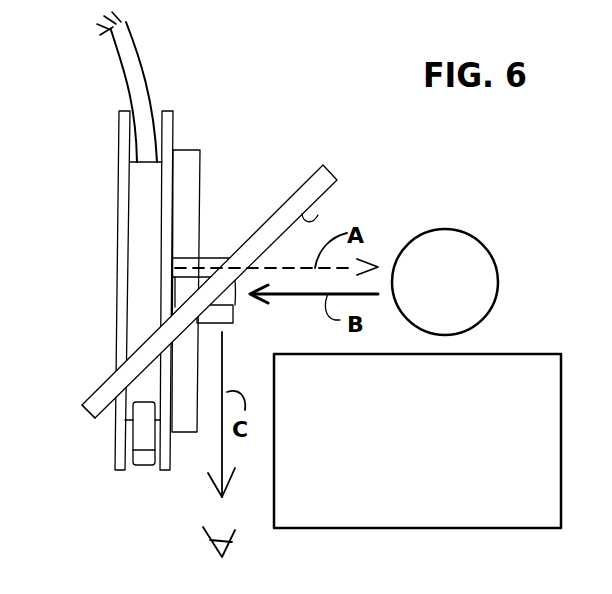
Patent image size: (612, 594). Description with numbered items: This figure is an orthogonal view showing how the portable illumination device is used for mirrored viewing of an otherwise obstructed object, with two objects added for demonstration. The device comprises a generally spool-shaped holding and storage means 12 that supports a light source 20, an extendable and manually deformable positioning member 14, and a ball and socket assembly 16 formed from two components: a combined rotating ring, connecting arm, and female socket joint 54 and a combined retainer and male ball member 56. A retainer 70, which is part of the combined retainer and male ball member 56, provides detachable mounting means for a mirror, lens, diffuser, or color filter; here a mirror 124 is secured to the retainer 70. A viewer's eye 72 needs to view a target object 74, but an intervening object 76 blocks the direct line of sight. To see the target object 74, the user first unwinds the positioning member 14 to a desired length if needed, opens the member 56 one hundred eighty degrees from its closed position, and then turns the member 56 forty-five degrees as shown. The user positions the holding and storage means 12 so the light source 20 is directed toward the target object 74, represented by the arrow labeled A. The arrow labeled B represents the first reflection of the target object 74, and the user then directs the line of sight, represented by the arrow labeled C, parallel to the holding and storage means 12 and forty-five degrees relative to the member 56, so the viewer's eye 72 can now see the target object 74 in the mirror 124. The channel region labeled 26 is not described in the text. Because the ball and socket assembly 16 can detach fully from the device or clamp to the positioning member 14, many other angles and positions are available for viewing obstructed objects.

The holding and storage means 12 is at (118, 128).
The positioning member 14 is at (138, 41).
The ball and socket assembly 16 is at (307, 105).
The light source 20 is at (236, 302).
The cable channel 26 is at (145, 190).
The combined rotating ring, connecting arm, and female socket joint 54 is at (203, 153).
The combined retainer and male ball member 56 is at (298, 178).
The retainer 70 is at (95, 416).
The viewer's eye 72 is at (242, 527).
The target object 74 is at (458, 292).
The intervening object 76 is at (427, 445).
The mirror 124 is at (318, 215).